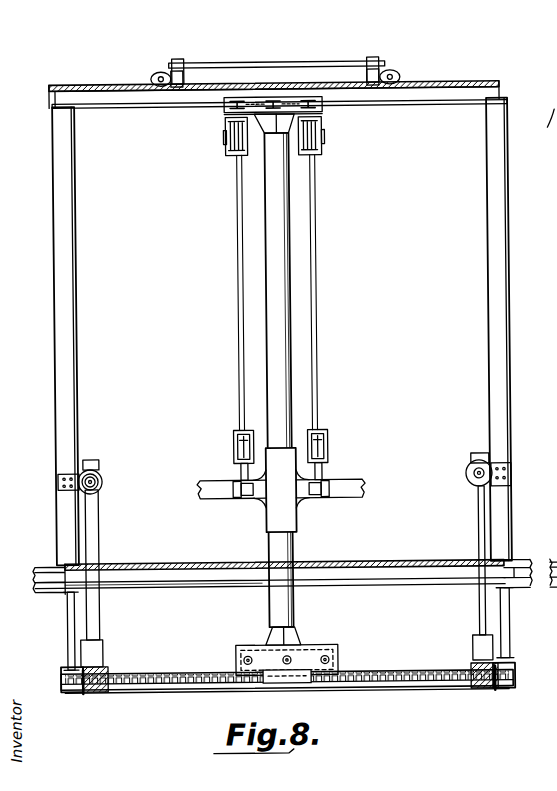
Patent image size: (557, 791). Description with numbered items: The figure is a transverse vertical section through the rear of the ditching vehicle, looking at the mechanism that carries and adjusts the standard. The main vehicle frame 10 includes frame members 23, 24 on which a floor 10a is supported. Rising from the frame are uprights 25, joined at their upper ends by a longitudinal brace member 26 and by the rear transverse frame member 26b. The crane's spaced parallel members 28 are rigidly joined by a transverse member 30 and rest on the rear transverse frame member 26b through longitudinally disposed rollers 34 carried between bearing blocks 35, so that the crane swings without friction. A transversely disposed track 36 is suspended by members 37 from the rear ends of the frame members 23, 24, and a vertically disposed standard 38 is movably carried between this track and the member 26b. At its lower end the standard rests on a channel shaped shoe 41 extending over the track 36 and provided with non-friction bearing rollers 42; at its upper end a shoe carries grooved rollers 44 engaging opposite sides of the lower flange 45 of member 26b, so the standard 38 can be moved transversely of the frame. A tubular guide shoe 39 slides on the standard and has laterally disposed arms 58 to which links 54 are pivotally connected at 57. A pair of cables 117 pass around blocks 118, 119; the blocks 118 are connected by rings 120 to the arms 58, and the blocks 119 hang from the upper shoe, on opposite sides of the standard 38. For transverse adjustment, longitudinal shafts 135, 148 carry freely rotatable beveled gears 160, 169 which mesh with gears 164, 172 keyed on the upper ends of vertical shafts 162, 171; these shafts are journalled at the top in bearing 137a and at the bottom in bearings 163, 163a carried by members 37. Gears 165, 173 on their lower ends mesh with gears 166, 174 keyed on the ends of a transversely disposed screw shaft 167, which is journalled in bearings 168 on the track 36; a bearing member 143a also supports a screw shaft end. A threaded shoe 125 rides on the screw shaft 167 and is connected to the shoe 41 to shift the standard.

The main vehicle frame 10 is at (414, 586).
The floor 10a is at (250, 586).
The frame member 23 is at (515, 585).
The frame member 24 is at (58, 575).
The upright 25 is at (55, 290).
The longitudinal brace member 26 is at (58, 94).
The rear transverse frame member 26b is at (150, 95).
The crane frame member 28 is at (181, 58).
The transverse member 30 is at (270, 62).
The roller 34 is at (157, 76).
The bearing block 35 is at (172, 72).
The track 36 is at (345, 688).
The suspension member 37 is at (65, 636).
The standard 38 is at (291, 308).
The tubular guide shoe 39 is at (296, 525).
The channel shaped shoe 41 is at (315, 645).
The non-friction bearing roller 42 is at (335, 652).
The grooved roller 44 is at (327, 112).
The lower flange 45 is at (225, 108).
The link 54 is at (199, 480).
The pivotal connection 57 is at (220, 498).
The lateral arm 58 is at (256, 498).
The cable 117 is at (239, 278).
The block 118 is at (240, 430).
The block 119 is at (228, 140).
The ring 120 is at (240, 474).
The slide block 125 is at (262, 683).
The shaft 135 is at (492, 473).
The bearing 137a is at (57, 478).
The bearing member 143a is at (552, 130).
The shaft 148 is at (83, 488).
The beveled gear 160 is at (470, 485).
The vertical shaft 162 is at (477, 538).
The bearing 163 is at (470, 645).
The bearing 163a is at (100, 648).
The beveled gear 164 is at (484, 456).
The beveled gear 165 is at (475, 690).
The beveled gear 166 is at (492, 692).
The screw shaft 167 is at (395, 691).
The bearing 168 is at (65, 685).
The beveled gear 169 is at (101, 481).
The vertical shaft 171 is at (95, 525).
The beveled gear 172 is at (98, 464).
The beveled gear 173 is at (100, 690).
The beveled gear 174 is at (80, 692).